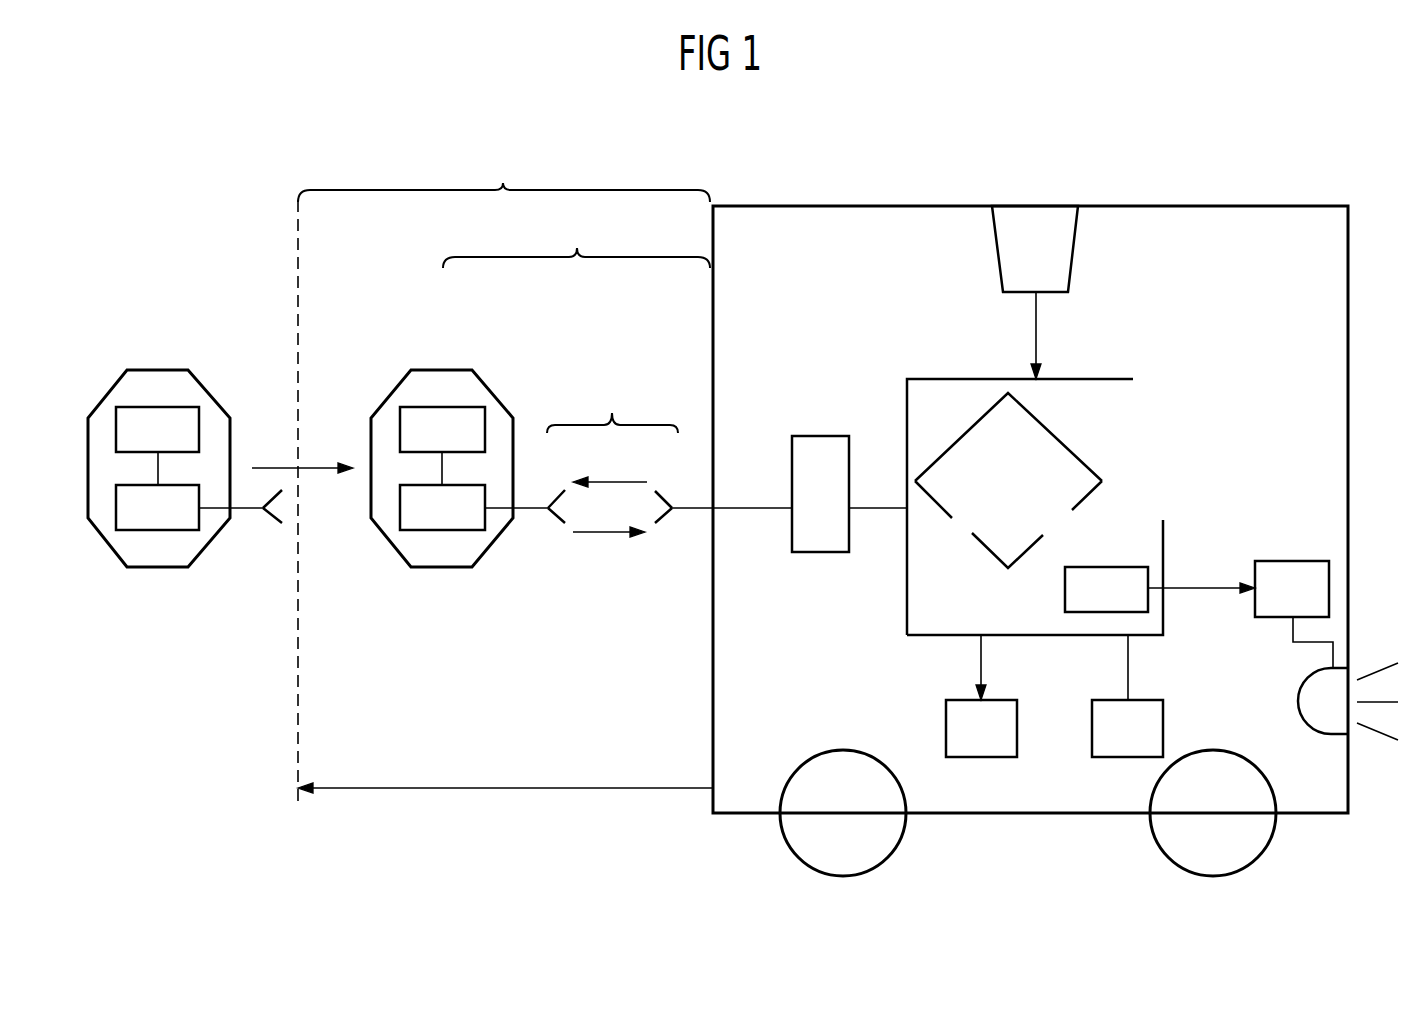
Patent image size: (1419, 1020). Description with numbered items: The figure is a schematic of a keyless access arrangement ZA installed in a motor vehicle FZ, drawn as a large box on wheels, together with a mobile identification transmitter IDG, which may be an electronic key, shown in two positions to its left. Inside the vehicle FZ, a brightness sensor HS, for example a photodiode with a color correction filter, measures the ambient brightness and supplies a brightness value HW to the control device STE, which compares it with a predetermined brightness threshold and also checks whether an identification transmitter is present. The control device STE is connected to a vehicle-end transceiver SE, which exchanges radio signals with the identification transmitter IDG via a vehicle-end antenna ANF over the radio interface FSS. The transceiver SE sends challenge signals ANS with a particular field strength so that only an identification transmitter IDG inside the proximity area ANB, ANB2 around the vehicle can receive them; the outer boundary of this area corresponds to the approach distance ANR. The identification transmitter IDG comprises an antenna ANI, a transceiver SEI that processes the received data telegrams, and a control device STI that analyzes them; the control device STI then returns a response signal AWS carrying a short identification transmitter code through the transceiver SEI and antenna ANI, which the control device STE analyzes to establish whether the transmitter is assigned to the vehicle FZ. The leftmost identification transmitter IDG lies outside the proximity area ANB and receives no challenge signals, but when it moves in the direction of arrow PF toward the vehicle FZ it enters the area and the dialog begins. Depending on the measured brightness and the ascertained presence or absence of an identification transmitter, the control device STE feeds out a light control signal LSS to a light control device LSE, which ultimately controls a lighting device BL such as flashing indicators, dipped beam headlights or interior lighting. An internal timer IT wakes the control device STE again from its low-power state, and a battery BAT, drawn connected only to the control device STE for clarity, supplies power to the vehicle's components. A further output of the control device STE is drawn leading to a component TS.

The identification transmitter IDG is at (157, 370).
The control device at the identification transmitter end STI is at (300, 446).
The transceiver at the identification transmitter end SEI is at (332, 507).
The antenna of the identification transmitter ANI is at (274, 518).
The arrow PF is at (302, 453).
The proximity area ANB is at (504, 174).
The proximity area ANB2 is at (576, 241).
The radio interface FSS is at (612, 404).
The challenge signal ANS is at (610, 465).
The response signal AWS is at (609, 548).
The vehicle-end antenna ANF is at (662, 520).
The motor vehicle FZ is at (1198, 206).
The brightness sensor HS is at (1035, 249).
The brightness value HW is at (1056, 335).
The access arrangement ZA is at (872, 365).
The vehicle-end transceiver SE is at (810, 494).
The control device STE is at (1035, 507).
The internal timer IT is at (1106, 589).
The light control signal LSS is at (1201, 572).
The lighting control unit LSE is at (1294, 614).
The lighting device BL is at (1348, 701).
The door lock TS is at (981, 696).
The battery BAT is at (1127, 696).
The approach distance ANR is at (505, 804).